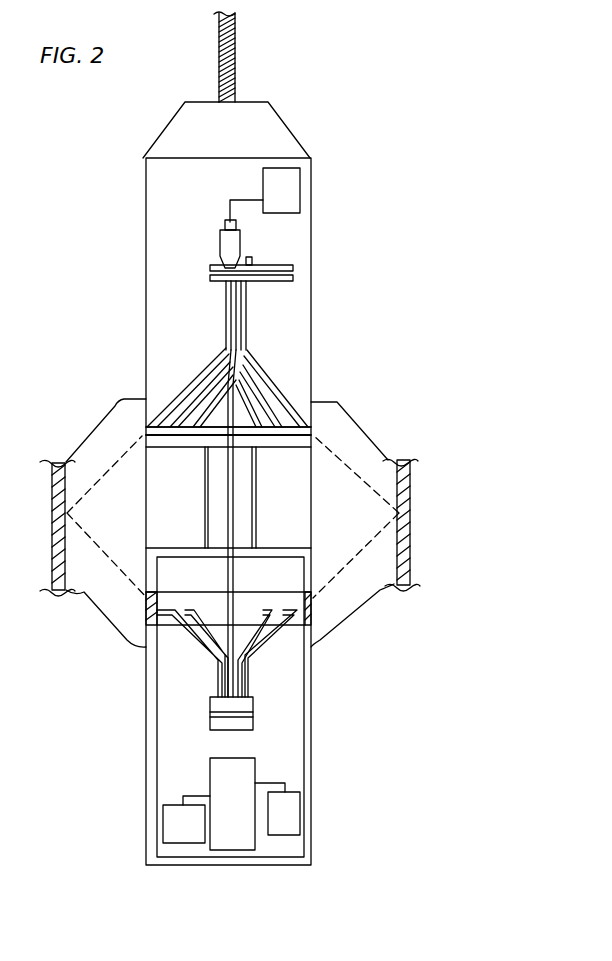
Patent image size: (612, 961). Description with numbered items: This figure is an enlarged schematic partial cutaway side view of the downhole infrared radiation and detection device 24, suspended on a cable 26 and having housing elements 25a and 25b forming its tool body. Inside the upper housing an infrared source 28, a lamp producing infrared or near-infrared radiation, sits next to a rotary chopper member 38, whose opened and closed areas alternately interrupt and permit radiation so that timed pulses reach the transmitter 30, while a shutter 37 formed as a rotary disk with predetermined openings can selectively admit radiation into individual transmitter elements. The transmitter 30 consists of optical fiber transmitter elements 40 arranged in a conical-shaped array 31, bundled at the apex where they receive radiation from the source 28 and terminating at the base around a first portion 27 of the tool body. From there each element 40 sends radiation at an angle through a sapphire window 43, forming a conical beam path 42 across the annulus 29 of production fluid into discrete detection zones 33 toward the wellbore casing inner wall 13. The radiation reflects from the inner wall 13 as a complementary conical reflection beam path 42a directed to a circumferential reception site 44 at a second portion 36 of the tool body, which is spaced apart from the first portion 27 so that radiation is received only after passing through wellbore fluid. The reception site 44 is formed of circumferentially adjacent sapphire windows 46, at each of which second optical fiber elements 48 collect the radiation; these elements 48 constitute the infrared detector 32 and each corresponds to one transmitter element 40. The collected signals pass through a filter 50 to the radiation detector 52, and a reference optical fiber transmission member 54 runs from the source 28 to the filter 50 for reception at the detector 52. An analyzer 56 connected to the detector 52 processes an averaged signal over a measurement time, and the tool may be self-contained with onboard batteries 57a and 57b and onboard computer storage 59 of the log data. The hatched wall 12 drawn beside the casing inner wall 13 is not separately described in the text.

The borehole wall 12 is at (407, 535).
The lower borehole wall portion 13 is at (398, 597).
The tool housing 24 is at (322, 219).
The upper housing section 25a is at (387, 281).
The lower housing section 25b is at (385, 818).
The wireline cable 26 is at (236, 62).
The bulkhead plate 27 is at (346, 428).
The motor 28 is at (220, 240).
The upper wall portion 29 is at (373, 462).
The upper assembly 30 is at (170, 351).
The fan-out region 31 is at (168, 377).
The lower instrument compartment 32 is at (180, 752).
The borehole wall section 33 is at (405, 487).
The hatched partition plate 36 is at (320, 615).
The lower mounting plate 37 is at (293, 280).
The upper mounting plate 38 is at (293, 265).
The fiber optic cables 40 is at (290, 400).
The light beam path 42 is at (105, 471).
The lower light beam path 42a is at (86, 597).
The window plate 43 is at (141, 437).
The inner housing 44 is at (136, 618).
The support posts 46 is at (145, 590).
The return fibers 48 is at (205, 643).
The connector 50 is at (254, 700).
The connector interface 52 is at (254, 723).
The central cable 54 is at (234, 496).
The electronics module 56 is at (257, 843).
The upper power supply 57a is at (379, 181).
The lower power supply 57b is at (301, 821).
The battery pack 59 is at (188, 843).